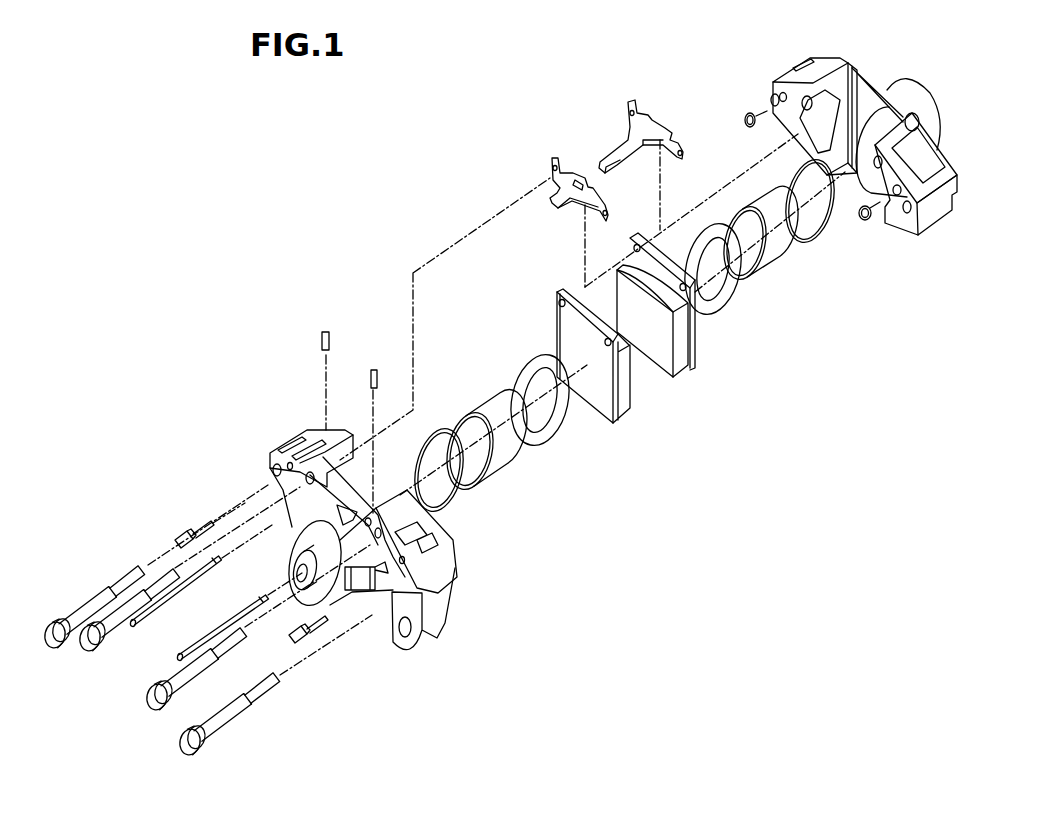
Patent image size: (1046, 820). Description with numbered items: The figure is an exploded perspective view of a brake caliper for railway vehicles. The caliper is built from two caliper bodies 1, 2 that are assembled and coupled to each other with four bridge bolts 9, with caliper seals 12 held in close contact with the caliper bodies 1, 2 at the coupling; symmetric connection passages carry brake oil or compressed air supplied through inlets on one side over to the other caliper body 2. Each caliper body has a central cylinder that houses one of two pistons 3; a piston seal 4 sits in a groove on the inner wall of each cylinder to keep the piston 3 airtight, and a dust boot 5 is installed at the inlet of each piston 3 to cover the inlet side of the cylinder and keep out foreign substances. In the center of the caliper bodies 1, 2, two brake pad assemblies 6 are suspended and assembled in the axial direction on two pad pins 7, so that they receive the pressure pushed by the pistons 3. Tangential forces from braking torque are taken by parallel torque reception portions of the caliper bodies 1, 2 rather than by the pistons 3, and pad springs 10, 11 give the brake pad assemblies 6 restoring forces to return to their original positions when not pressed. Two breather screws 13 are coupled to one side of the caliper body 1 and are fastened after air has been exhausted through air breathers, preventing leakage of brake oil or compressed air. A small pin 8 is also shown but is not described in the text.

The caliper body 1 is at (312, 423).
The caliper body 2 is at (822, 58).
The piston 3 is at (480, 395).
The piston seal 4 is at (430, 428).
The dust boot 5 is at (527, 358).
The brake pad assembly 6 is at (556, 291).
The pad pin 7 is at (202, 577).
The pin 8 is at (325, 331).
The bridge bolt 9 is at (53, 650).
The pad spring 10 is at (557, 158).
The pad spring 11 is at (634, 102).
The caliper seal 12 is at (750, 110).
The breather screw 13 is at (197, 530).